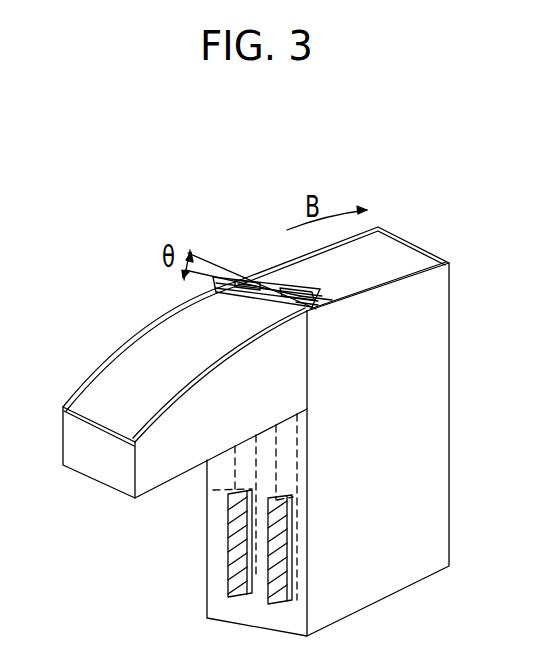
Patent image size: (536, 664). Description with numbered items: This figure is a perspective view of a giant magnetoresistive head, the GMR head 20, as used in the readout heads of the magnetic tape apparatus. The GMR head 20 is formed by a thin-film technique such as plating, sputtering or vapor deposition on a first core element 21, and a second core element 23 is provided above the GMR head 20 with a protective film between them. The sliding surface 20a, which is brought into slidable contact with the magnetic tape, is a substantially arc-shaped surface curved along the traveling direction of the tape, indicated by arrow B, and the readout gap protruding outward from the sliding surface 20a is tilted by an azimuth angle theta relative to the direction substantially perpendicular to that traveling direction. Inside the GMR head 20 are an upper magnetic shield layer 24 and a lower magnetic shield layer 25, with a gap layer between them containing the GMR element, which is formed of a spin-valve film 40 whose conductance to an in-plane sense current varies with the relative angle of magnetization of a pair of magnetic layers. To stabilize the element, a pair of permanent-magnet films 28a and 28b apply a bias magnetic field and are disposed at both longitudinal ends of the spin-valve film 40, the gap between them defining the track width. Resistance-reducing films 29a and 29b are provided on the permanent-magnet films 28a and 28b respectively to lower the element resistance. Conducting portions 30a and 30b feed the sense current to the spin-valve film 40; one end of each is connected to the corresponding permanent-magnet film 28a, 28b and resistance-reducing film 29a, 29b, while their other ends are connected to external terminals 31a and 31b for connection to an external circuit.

The GMR head 20 is at (257, 214).
The sliding surface 20a is at (405, 252).
The first core element 21 is at (415, 563).
The second core element 23 is at (85, 457).
The upper magnetic shield layer 24 is at (325, 290).
The lower magnetic shield layer 25 is at (255, 303).
The permanent-magnet film 28a is at (313, 307).
The permanent-magnet film 28b is at (242, 276).
The resistance-reducing film 29a is at (332, 302).
The resistance-reducing film 29b is at (245, 277).
The conducting portion 30a is at (287, 475).
The conducting portion 30b is at (213, 490).
The external terminal 31a is at (228, 575).
The external terminal 31b is at (228, 537).
The spin-valve film 40 is at (285, 282).